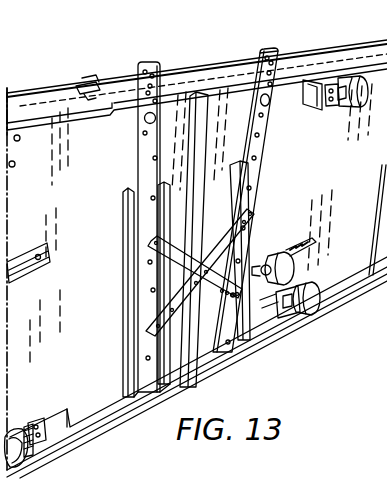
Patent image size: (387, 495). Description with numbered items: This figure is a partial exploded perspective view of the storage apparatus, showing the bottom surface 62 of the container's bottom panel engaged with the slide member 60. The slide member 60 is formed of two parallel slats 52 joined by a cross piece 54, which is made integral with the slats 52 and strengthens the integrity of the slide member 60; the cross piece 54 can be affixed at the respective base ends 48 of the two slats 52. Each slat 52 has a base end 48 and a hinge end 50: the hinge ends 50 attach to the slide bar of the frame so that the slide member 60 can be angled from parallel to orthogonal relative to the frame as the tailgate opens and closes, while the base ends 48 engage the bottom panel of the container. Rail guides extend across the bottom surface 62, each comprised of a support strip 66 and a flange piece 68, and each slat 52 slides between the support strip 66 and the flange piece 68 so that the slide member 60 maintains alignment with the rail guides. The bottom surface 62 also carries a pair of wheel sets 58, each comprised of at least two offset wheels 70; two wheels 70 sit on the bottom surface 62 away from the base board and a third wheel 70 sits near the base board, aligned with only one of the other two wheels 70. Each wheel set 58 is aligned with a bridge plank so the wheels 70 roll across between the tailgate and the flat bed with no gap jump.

The base end 48 is at (152, 346).
The hinge end 50 is at (279, 52).
The slat 52 is at (150, 226).
The cross piece 54 is at (262, 234).
The wheel set 58 is at (296, 256).
The slide member 60 is at (166, 256).
The bottom surface 62 is at (355, 199).
The support strip 66 is at (131, 388).
The flange piece 68 is at (145, 328).
The wheel 70 is at (315, 306).